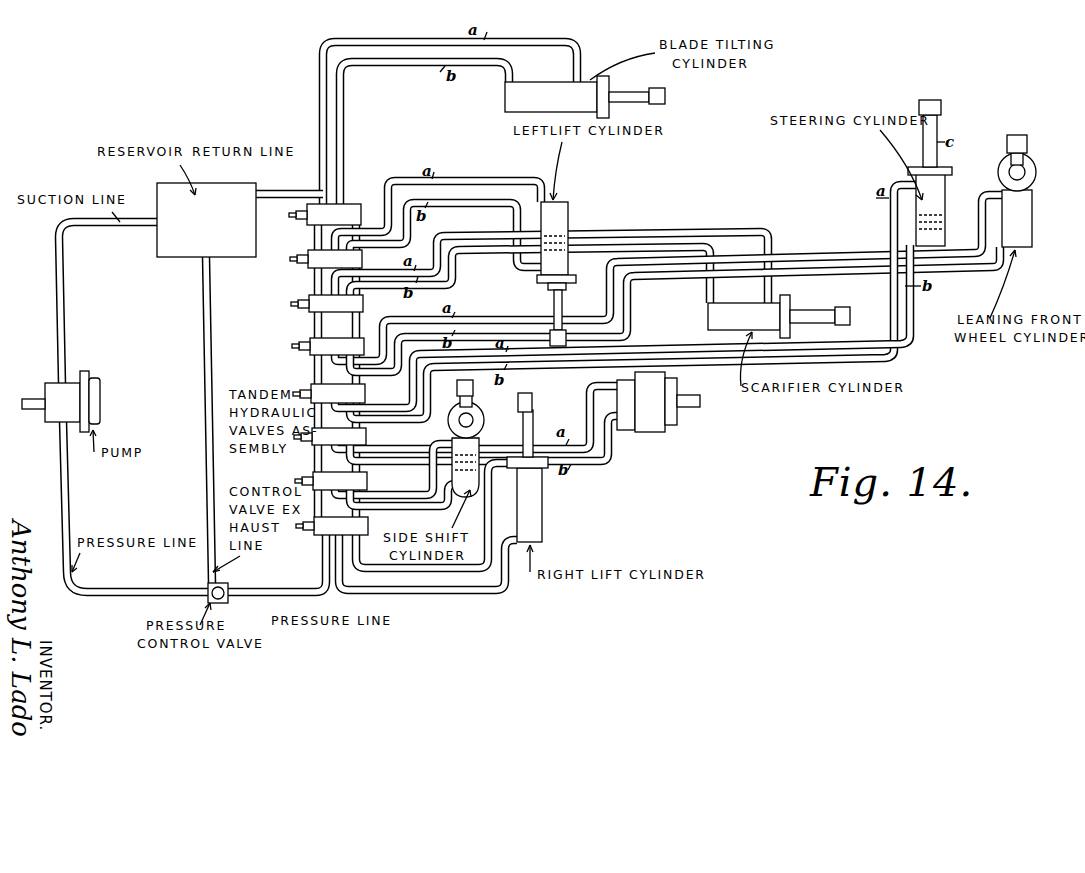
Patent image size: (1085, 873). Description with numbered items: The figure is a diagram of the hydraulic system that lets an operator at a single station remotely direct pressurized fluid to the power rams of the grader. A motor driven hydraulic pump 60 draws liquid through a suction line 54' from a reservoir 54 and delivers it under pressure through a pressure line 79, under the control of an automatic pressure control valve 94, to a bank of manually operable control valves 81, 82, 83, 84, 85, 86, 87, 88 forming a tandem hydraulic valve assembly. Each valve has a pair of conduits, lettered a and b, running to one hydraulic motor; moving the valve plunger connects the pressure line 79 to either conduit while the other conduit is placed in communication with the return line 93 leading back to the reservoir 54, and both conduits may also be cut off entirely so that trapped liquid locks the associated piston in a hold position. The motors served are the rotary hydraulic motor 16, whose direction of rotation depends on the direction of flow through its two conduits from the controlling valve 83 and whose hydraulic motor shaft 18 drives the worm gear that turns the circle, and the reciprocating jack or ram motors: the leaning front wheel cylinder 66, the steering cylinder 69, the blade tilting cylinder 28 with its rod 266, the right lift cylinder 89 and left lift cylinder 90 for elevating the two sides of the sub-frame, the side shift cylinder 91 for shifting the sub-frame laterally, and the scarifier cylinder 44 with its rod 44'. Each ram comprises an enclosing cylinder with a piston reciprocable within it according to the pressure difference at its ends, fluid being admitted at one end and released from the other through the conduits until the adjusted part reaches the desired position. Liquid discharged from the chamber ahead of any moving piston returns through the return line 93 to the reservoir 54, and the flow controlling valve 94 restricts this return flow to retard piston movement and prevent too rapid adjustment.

The rotary hydraulic motor 16 is at (660, 426).
The hydraulic motor shaft 18 is at (692, 405).
The blade tilting ram 28 is at (585, 86).
The blade tilting cylinder piston rod 266 is at (630, 101).
The scarifier elevating ram 44 is at (749, 311).
The scarifier cylinder piston rod 44' is at (820, 301).
The reservoir 54 is at (199, 210).
The suction line 54' is at (96, 293).
The hydraulic pump 60 is at (87, 393).
The front wheel leaning ram 66 is at (1033, 216).
The steering ram 69 is at (937, 197).
The pressure line 79 is at (316, 324).
The control valve 81 is at (322, 530).
The control valve 82 is at (320, 480).
The control valve 83 is at (318, 439).
The control valve 84 is at (318, 392).
The control valve 85 is at (292, 346).
The control valve 86 is at (291, 303).
The control valve 87 is at (290, 259).
The control valve 88 is at (296, 216).
The right side elevating ram 89 is at (543, 519).
The left side elevating ram 90 is at (569, 213).
The sub-frame shifting ram 91 is at (482, 423).
The return line 93 is at (323, 178).
The pressure control valve 94 is at (208, 589).